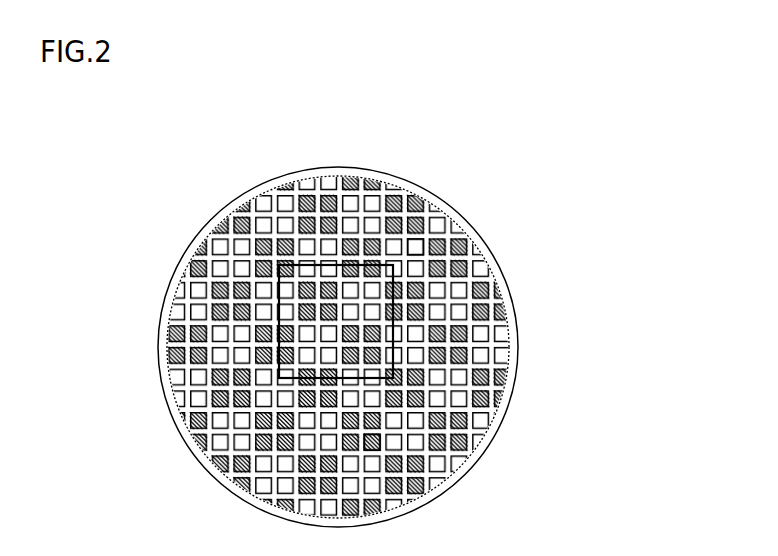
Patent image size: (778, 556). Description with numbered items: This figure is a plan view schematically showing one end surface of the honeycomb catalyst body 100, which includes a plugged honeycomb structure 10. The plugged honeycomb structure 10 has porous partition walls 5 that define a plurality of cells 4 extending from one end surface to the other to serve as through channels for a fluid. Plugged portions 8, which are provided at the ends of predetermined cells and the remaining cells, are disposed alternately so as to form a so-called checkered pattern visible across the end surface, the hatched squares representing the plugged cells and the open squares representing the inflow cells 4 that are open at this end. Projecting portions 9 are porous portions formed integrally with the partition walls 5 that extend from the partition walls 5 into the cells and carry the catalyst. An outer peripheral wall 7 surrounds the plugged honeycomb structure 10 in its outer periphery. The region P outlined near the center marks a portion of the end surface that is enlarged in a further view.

The honeycomb catalyst body 100 is at (682, 135).
The plugged honeycomb structure 10 is at (522, 395).
The outer peripheral wall 7 is at (363, 178).
The partition wall 5 is at (470, 334).
The cell 4 is at (417, 247).
The plugged portion 8 is at (383, 440).
The projecting portion 9 is at (461, 297).
The region P is at (279, 312).